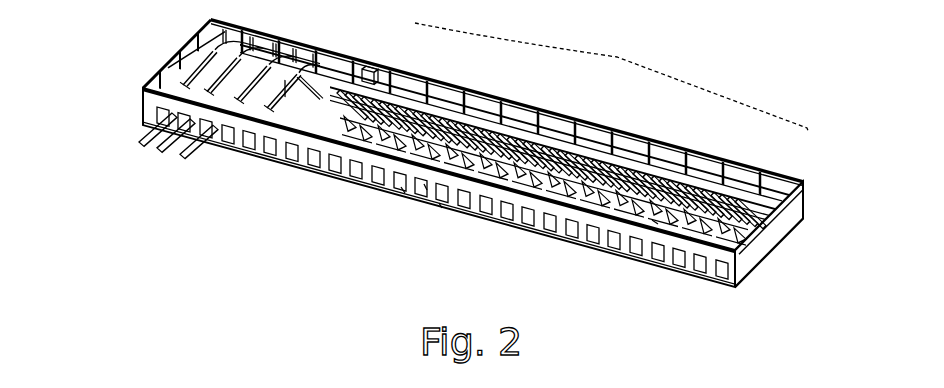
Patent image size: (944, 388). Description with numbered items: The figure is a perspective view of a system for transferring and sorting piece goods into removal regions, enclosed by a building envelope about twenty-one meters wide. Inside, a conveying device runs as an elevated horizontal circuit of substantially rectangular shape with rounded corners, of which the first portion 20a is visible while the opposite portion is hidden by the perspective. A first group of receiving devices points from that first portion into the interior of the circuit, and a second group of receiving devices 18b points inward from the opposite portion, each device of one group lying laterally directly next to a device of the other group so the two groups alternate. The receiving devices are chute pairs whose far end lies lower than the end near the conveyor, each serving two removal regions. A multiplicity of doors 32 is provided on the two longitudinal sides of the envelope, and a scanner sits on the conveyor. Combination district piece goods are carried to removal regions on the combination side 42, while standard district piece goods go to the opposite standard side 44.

The second group of receiving devices 18b is at (652, 220).
The first portion of the conveying device 20a is at (690, 1).
The doors 32 is at (442, 208).
The combination side 42 is at (539, 244).
The standard side 44 is at (714, 82).